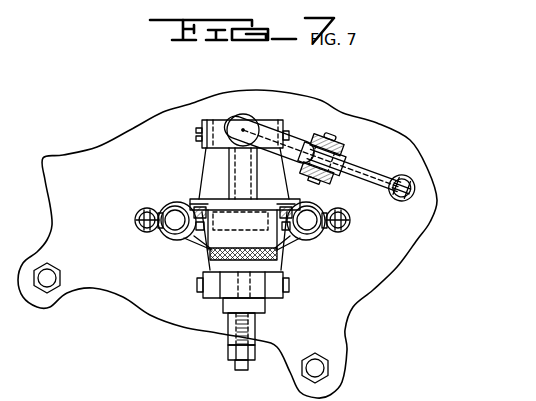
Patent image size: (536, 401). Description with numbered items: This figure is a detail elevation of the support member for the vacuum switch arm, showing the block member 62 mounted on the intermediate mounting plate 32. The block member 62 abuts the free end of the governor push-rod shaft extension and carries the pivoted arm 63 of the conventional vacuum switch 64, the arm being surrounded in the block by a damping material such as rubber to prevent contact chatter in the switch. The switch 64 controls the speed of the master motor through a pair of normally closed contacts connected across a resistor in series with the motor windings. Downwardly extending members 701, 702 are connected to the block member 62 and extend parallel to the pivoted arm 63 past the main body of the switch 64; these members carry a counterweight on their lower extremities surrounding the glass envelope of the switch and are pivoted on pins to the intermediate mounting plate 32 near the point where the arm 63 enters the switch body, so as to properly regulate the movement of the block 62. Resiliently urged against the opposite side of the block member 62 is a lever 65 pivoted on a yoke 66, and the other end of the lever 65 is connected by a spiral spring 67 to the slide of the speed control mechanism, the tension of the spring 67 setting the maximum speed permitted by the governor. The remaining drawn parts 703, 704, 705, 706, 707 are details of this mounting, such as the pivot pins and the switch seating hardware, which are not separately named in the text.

The intermediate mounting plate 32 is at (107, 189).
The block member 62 is at (256, 118).
The pivoted arm 63 is at (243, 178).
The vacuum switch 64 is at (228, 318).
The lever 65 is at (296, 138).
The yoke 66 is at (336, 140).
The spiral spring 67 is at (406, 175).
The downwardly extending member 701 is at (292, 208).
The downwardly extending member 702 is at (196, 204).
The lower block 703 is at (284, 296).
The right washer 704 is at (320, 212).
The left washer 705 is at (170, 211).
The left arm 706 is at (204, 244).
The right arm 707 is at (283, 252).